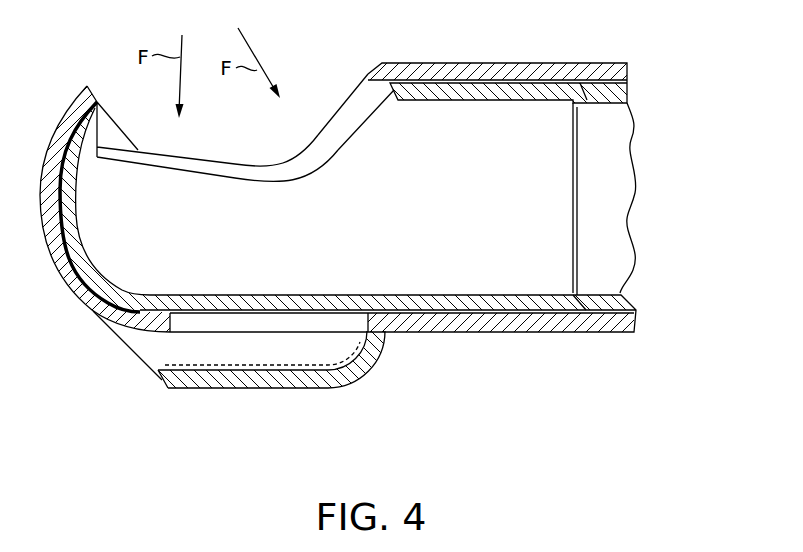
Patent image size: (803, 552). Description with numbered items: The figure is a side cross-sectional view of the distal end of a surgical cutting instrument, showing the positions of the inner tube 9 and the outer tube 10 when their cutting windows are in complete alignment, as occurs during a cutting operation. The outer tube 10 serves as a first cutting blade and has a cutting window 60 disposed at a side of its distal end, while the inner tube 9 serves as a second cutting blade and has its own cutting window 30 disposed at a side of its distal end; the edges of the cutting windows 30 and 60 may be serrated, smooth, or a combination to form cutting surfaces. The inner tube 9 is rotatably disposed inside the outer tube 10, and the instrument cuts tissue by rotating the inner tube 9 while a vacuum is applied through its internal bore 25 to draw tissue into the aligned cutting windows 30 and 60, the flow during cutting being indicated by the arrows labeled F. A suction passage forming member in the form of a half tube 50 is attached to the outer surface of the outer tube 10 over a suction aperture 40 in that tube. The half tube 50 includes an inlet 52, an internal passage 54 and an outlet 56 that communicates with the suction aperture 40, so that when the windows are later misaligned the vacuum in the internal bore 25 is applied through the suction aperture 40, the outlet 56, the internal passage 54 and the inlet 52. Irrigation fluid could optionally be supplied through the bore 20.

The inner tube 9 is at (607, 98).
The outer tube 10 is at (453, 63).
The bore 20 is at (636, 310).
The internal bore 25 is at (450, 273).
The cutting window 30 is at (330, 147).
The cutting window 60 is at (349, 98).
The inlet 52 is at (122, 346).
The suction aperture 40 is at (183, 320).
The internal passage 54 is at (258, 356).
The half tube 50 is at (265, 388).
The outlet 56 is at (367, 357).